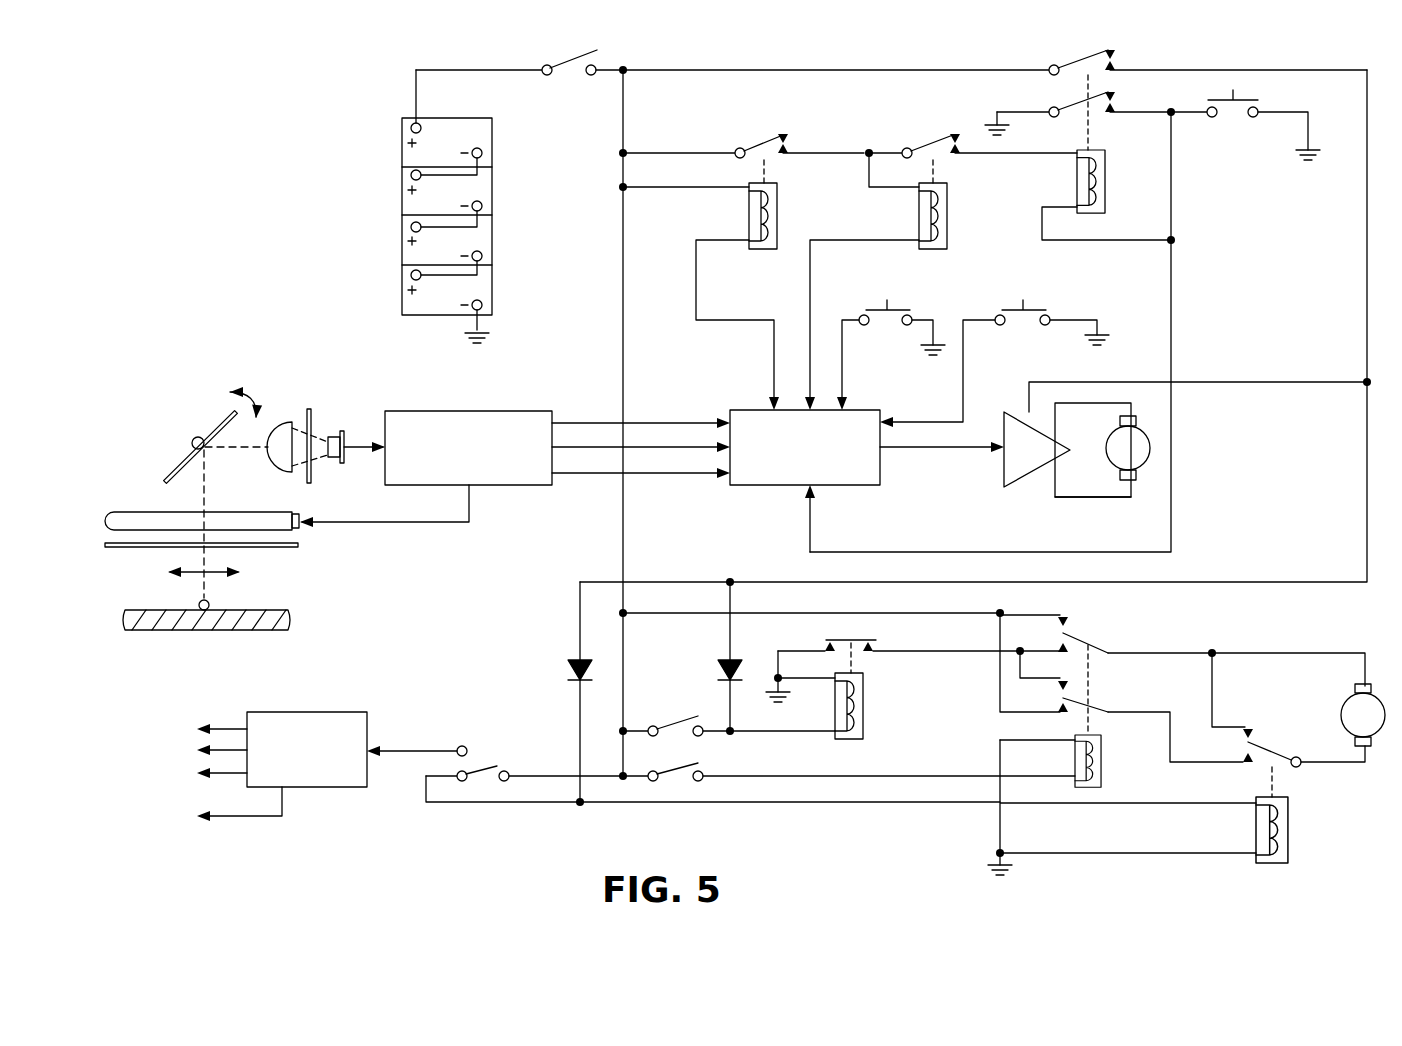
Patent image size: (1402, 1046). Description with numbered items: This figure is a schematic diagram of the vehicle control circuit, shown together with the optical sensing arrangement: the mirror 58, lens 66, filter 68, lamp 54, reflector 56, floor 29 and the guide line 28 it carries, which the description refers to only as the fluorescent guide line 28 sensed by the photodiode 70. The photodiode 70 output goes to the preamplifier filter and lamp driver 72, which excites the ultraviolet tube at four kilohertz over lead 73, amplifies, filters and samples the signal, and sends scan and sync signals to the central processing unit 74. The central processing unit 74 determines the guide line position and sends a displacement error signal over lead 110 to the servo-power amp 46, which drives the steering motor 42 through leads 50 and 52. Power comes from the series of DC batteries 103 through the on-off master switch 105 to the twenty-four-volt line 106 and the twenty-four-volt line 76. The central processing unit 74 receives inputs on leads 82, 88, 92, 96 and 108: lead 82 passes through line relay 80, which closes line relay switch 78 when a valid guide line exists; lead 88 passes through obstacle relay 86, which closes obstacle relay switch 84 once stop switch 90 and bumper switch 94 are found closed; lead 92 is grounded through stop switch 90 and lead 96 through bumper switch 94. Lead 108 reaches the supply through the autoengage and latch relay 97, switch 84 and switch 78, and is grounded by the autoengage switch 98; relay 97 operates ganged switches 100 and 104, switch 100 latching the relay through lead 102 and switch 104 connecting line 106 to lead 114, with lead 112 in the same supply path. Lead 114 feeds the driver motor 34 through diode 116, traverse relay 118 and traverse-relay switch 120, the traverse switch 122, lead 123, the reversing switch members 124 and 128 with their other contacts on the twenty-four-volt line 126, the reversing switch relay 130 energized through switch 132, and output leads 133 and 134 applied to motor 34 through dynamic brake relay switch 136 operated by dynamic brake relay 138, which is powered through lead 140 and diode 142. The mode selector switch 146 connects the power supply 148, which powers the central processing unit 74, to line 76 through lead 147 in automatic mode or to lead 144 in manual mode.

The guide line 28 is at (212, 604).
The ground surface 29 is at (128, 610).
The driver motor 34 is at (1343, 702).
The steering motor 42 is at (1108, 460).
The servo-power amp 46 is at (998, 477).
The lead 50 is at (1087, 405).
The lead 52 is at (1096, 500).
The lamp 54 is at (108, 512).
The reflector 56 is at (107, 545).
The scanning mirror 58 is at (218, 422).
The lens 66 is at (286, 421).
The optical filter 68 is at (312, 409).
The photodiode 70 is at (333, 433).
The preamplifier filter and lamp driver 72 is at (430, 410).
The lamp driver lead 73 is at (403, 525).
The central processing unit 74 is at (742, 410).
The 24-volt line 76 is at (625, 130).
The line relay switch 78 is at (750, 147).
The line relay 80 is at (748, 212).
The lead 82 is at (697, 292).
The obstacle relay switch 84 is at (923, 144).
The obstacle relay 86 is at (946, 207).
The lead 88 is at (812, 284).
The stop switch 90 is at (899, 316).
The lead 92 is at (847, 377).
The bumper switch 94 is at (1040, 313).
The lead 96 is at (927, 421).
The autoengage and latch relay 97 is at (1094, 192).
The autoengage switch 98 is at (1262, 107).
The switch 100 is at (1068, 108).
The lead 102 is at (1143, 111).
The DC batteries 103 is at (493, 147).
The switch 104 is at (1095, 50).
The on-off master switch 105 is at (572, 53).
The 24-volt line 106 is at (1000, 70).
The lead 108 is at (1172, 298).
The lead 110 is at (932, 450).
The power lead 112 is at (1258, 384).
The lead 114 is at (1366, 444).
The diode 116 is at (717, 660).
The traverse relay 118 is at (860, 713).
The traverse-relay switch 120 is at (860, 637).
The lead 123 is at (937, 650).
The traverse switch 122 is at (677, 722).
The switch member 124 is at (1097, 707).
The 24-volt line 126 is at (1000, 678).
The switch member 128 is at (1097, 645).
The reversing switch relay 130 is at (1103, 770).
The switch 132 is at (678, 765).
The output lead 133 is at (1170, 652).
The output lead 134 is at (1157, 708).
The dynamic brake relay switch 136 is at (1283, 753).
The dynamic brake relay 138 is at (1293, 853).
The lead 140 is at (893, 805).
The diode 142 is at (563, 662).
The lead 144 is at (537, 803).
The mode selector switch 146 is at (487, 770).
The lead 147 is at (538, 773).
The power supply 148 is at (320, 712).